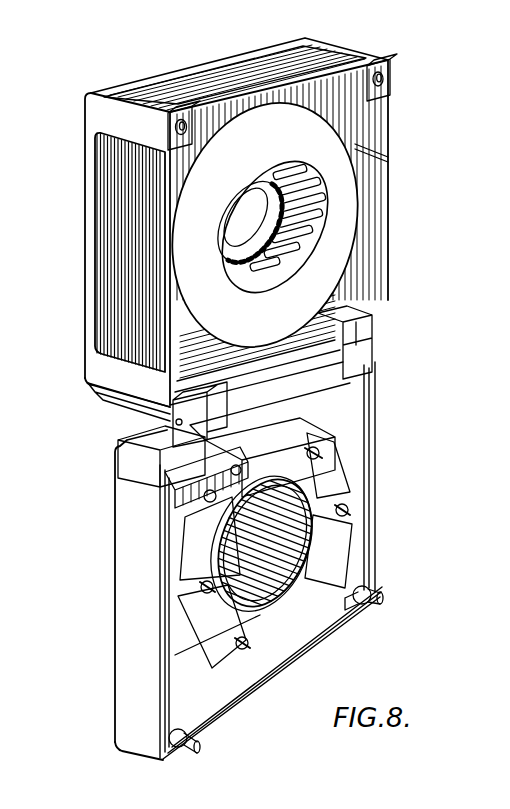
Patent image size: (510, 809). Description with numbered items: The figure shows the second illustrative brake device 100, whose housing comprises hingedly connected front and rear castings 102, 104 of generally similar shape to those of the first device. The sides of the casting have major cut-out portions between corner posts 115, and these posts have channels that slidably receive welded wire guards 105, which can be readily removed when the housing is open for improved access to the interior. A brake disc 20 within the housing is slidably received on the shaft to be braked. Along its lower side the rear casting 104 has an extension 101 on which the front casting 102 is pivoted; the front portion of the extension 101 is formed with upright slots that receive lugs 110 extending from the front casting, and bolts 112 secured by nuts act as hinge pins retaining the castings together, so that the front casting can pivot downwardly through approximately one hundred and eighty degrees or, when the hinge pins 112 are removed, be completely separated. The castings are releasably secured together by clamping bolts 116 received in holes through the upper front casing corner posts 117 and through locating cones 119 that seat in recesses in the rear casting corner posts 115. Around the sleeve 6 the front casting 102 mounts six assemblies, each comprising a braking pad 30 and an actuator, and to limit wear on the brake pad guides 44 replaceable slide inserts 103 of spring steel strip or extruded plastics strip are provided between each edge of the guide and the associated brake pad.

The brake device 100 is at (78, 165).
The rear casting 104 is at (85, 121).
The welded wire guards 105 is at (120, 258).
The corner posts 115 is at (392, 77).
The brake disc 20 is at (350, 203).
The lugs 110 is at (372, 348).
The extension 101 is at (100, 396).
The bolts 112 is at (172, 424).
The brake pad guides 44 is at (200, 476).
The replaceable slide inserts 103 is at (185, 500).
The front casting 102 is at (122, 600).
The braking pad 30 is at (335, 553).
The sleeve 6 is at (258, 592).
The clamping bolts 116 is at (381, 593).
The locating cones 119 is at (352, 608).
The front casing corner posts 117 is at (207, 723).